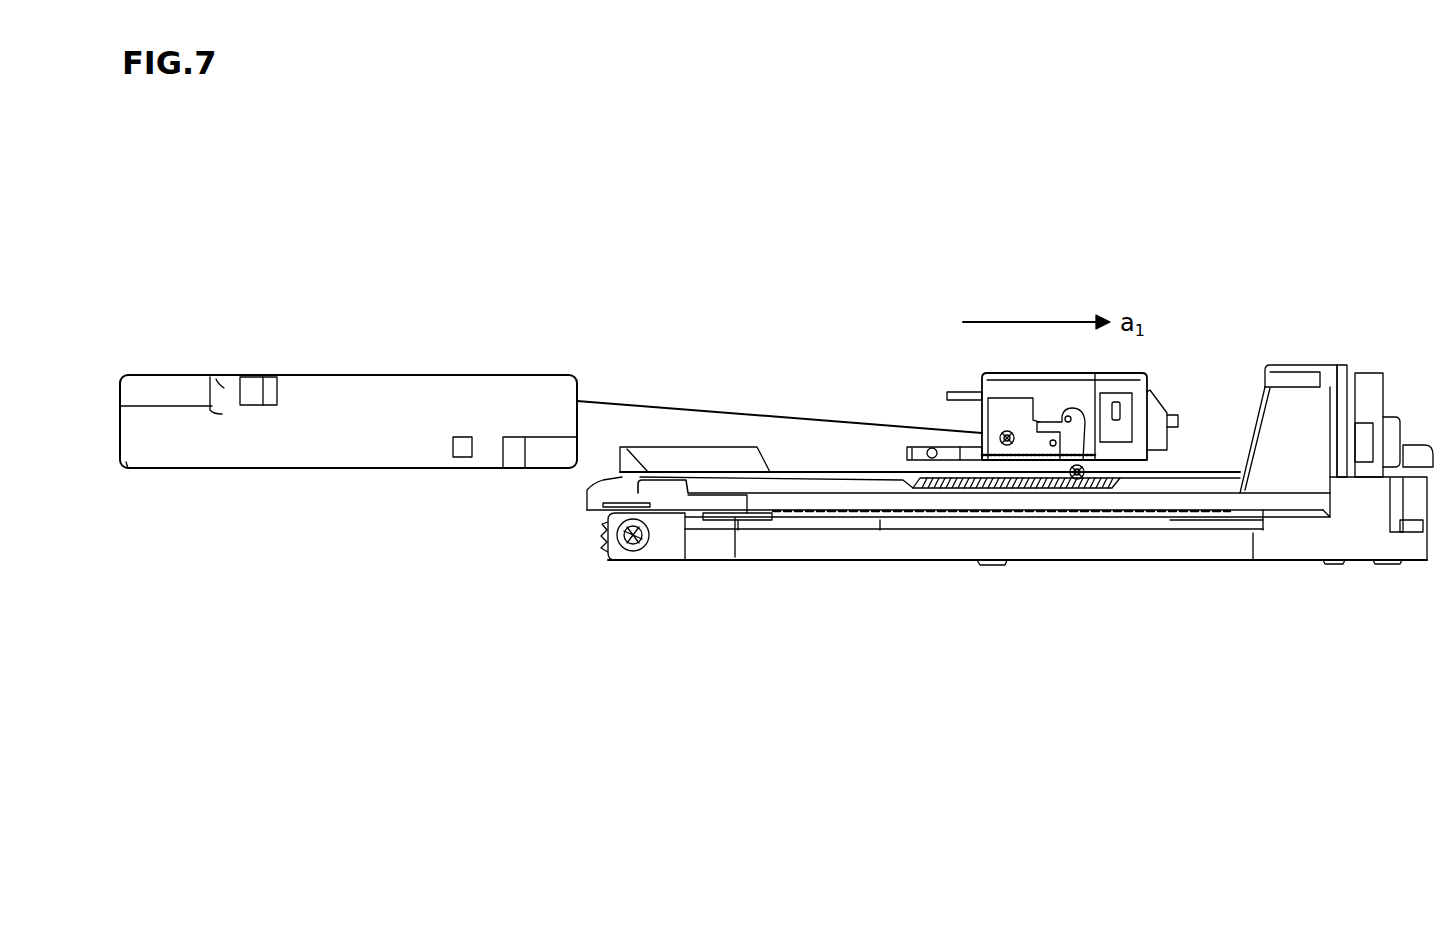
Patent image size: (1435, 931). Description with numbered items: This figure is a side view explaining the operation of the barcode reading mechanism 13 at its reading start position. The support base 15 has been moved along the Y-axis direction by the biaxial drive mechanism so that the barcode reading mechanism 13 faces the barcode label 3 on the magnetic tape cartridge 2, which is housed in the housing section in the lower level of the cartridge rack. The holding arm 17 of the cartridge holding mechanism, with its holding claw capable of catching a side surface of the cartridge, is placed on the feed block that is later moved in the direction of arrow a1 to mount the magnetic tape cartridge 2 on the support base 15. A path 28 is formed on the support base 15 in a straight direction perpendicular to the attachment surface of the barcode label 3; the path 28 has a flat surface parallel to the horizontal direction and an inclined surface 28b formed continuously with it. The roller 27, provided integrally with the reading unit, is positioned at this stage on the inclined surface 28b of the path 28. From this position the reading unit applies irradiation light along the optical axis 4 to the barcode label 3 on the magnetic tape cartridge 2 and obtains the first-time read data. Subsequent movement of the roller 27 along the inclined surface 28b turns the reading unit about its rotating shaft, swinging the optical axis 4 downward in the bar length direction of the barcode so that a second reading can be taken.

The magnetic tape cartridge 2 is at (277, 450).
The barcode label 3 is at (577, 430).
The optical axis 4 is at (727, 413).
The barcode reading mechanism 13 is at (1183, 358).
The support base 15 is at (840, 493).
The holding arm 17 is at (932, 450).
The roller 27 is at (1087, 492).
The path 28 is at (863, 477).
The inclined surface 28b is at (1021, 375).